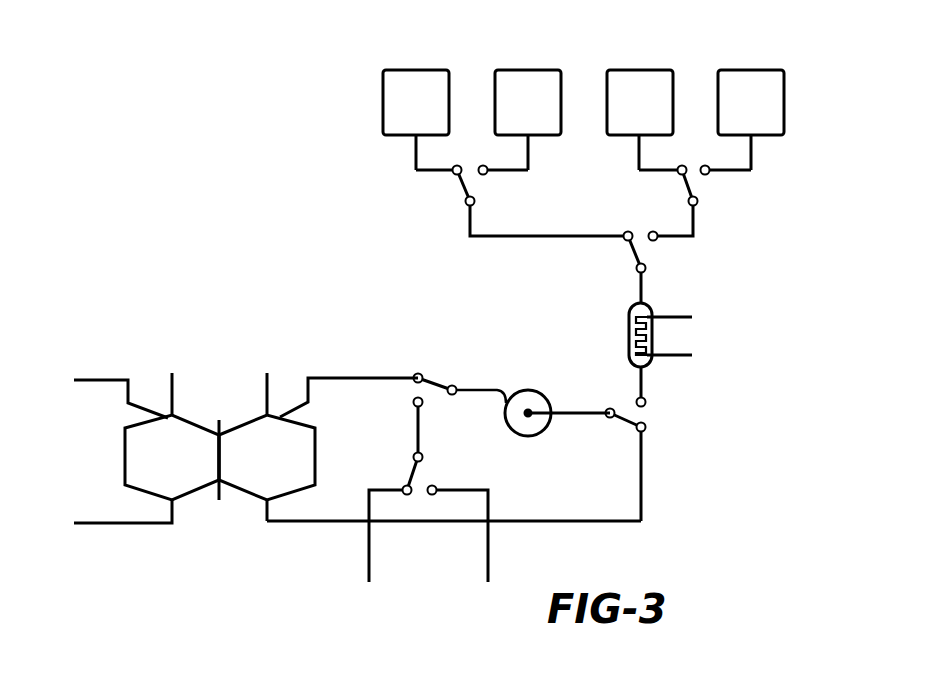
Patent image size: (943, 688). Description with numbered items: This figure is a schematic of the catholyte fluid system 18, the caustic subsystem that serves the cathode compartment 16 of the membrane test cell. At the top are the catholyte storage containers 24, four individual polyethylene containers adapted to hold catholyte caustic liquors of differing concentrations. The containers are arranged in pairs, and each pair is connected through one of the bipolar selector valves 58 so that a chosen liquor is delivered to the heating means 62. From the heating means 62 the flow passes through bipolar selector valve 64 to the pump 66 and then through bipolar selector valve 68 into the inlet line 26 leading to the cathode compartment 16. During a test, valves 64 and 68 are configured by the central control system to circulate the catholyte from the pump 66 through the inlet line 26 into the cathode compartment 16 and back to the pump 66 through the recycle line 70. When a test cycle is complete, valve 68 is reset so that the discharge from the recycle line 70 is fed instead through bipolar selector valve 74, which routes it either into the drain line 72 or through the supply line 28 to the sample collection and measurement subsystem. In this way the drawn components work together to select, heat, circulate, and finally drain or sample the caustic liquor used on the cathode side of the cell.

The catholyte fluid system 18 is at (553, 57).
The catholyte storage containers 24 is at (651, 68).
The bipolar selector valves 58 is at (455, 185).
The heating means 62 is at (655, 307).
The bipolar selector valve 64 is at (632, 418).
The pump 66 is at (530, 388).
The bipolar selector valve 68 is at (433, 375).
The inlet line 26 is at (350, 377).
The cathode compartment 16 is at (240, 425).
The recycle line 70 is at (325, 520).
The bipolar selector valve 74 is at (412, 480).
The drain line 72 is at (369, 563).
The supply line 28 is at (490, 567).